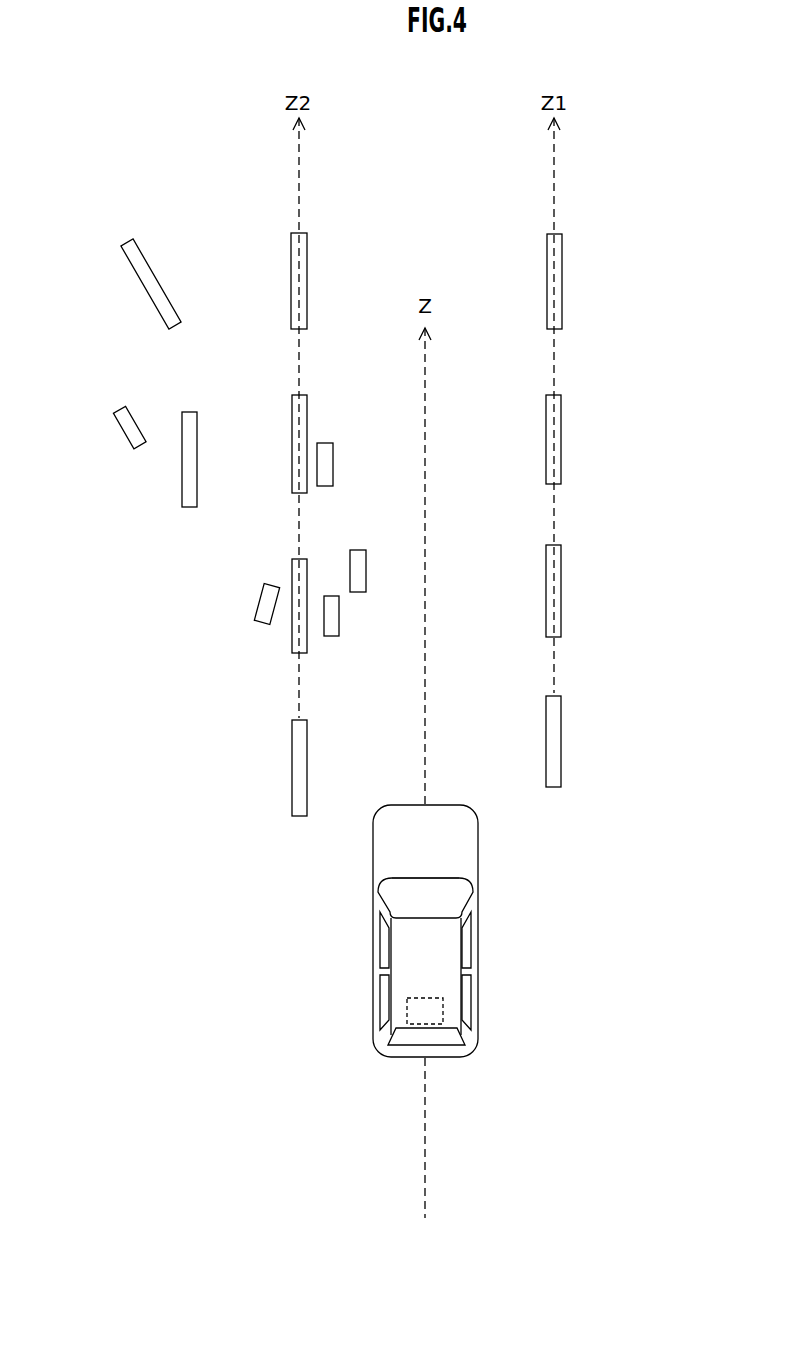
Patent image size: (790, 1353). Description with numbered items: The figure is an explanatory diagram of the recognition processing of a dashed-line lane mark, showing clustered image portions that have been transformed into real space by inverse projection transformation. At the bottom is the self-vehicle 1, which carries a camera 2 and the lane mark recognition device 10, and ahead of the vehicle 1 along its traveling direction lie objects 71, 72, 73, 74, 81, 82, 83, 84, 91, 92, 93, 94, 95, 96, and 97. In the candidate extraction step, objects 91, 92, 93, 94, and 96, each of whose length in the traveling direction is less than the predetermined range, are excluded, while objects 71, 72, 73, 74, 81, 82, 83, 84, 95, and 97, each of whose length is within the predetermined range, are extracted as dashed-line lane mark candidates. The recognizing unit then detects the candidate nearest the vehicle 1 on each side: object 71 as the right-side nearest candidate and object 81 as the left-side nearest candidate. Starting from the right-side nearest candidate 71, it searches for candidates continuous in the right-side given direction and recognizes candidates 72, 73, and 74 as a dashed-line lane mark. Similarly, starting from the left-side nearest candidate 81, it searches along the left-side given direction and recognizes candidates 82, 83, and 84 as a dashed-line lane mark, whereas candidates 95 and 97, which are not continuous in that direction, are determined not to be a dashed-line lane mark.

The vehicle 1 is at (445, 974).
The camera 2 is at (425, 913).
The lane mark recognition device 10 is at (405, 999).
The object 71 is at (555, 740).
The object 72 is at (555, 593).
The object 73 is at (555, 437).
The object 74 is at (556, 283).
The object 81 is at (297, 766).
The object 82 is at (297, 570).
The object 83 is at (298, 420).
The object 84 is at (297, 277).
The object 91 is at (338, 620).
The object 92 is at (355, 570).
The object 93 is at (327, 465).
The object 94 is at (260, 606).
The object 95 is at (190, 472).
The object 96 is at (130, 425).
The object 97 is at (148, 282).